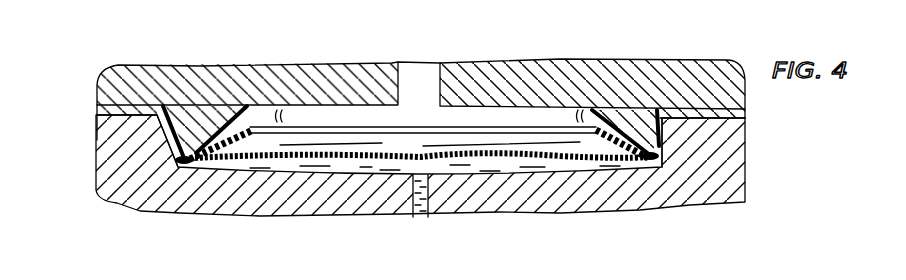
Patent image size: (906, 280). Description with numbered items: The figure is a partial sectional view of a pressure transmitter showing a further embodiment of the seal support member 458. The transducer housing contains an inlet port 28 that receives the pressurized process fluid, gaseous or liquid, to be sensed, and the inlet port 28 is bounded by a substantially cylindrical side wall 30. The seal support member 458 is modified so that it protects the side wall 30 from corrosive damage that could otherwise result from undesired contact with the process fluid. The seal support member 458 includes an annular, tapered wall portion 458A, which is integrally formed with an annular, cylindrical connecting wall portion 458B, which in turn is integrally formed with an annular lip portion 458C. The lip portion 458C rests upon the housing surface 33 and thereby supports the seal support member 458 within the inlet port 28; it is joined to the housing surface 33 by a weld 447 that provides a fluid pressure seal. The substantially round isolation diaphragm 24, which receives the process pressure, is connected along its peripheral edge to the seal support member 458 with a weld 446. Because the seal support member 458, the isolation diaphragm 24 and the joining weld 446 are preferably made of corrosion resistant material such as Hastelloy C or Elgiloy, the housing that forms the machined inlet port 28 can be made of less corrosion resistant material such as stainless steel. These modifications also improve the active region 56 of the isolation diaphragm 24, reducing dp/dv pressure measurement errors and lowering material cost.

The isolation diaphragm 24 is at (578, 172).
The inlet port 28 is at (462, 128).
The side wall 30 is at (668, 143).
The housing surface 33 is at (725, 110).
The active region 56 is at (430, 144).
The weld 446 is at (180, 168).
The weld 447 is at (176, 132).
The seal support member 458 is at (186, 108).
The tapered wall portion 458A is at (222, 156).
The connecting wall portion 458B is at (175, 161).
The lip portion 458C is at (137, 110).